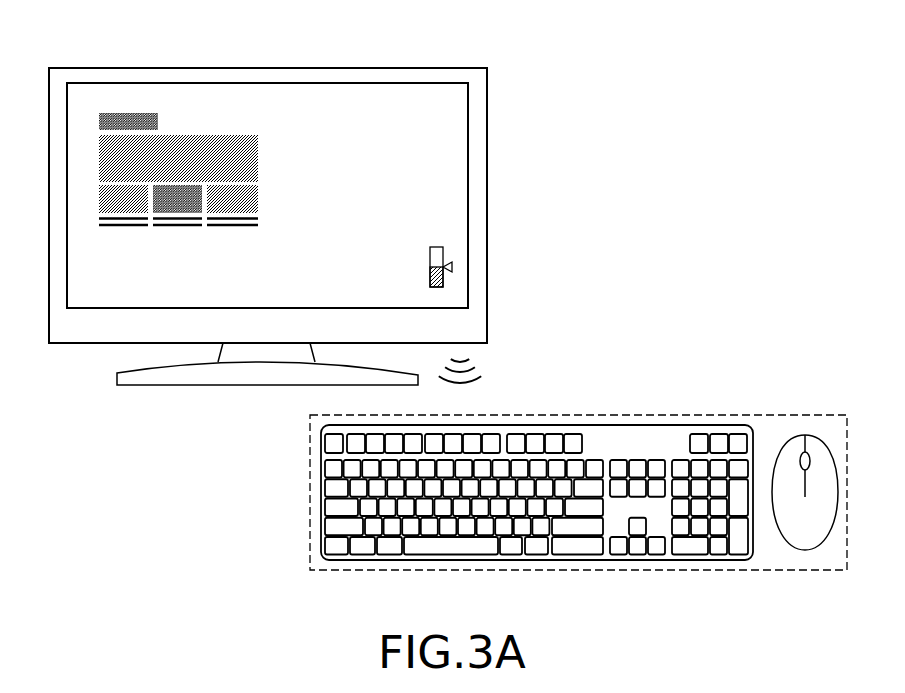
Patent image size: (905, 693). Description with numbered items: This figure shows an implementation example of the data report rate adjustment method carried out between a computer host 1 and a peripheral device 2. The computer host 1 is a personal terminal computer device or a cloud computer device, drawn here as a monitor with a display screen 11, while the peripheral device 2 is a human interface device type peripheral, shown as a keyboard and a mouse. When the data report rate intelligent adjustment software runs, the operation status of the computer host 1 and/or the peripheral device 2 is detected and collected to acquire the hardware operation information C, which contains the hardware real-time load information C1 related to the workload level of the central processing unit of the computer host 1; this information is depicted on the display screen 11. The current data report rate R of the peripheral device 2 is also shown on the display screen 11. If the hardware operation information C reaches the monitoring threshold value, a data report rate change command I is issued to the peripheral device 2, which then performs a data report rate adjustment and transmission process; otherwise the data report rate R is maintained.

The computer host 1 is at (137, 77).
The display screen 11 is at (327, 103).
The hardware operation information C is at (256, 203).
The hardware real-time load information C1 is at (178, 169).
The data report rate R is at (436, 244).
The data report rate change command I is at (460, 357).
The peripheral device 2 is at (689, 412).